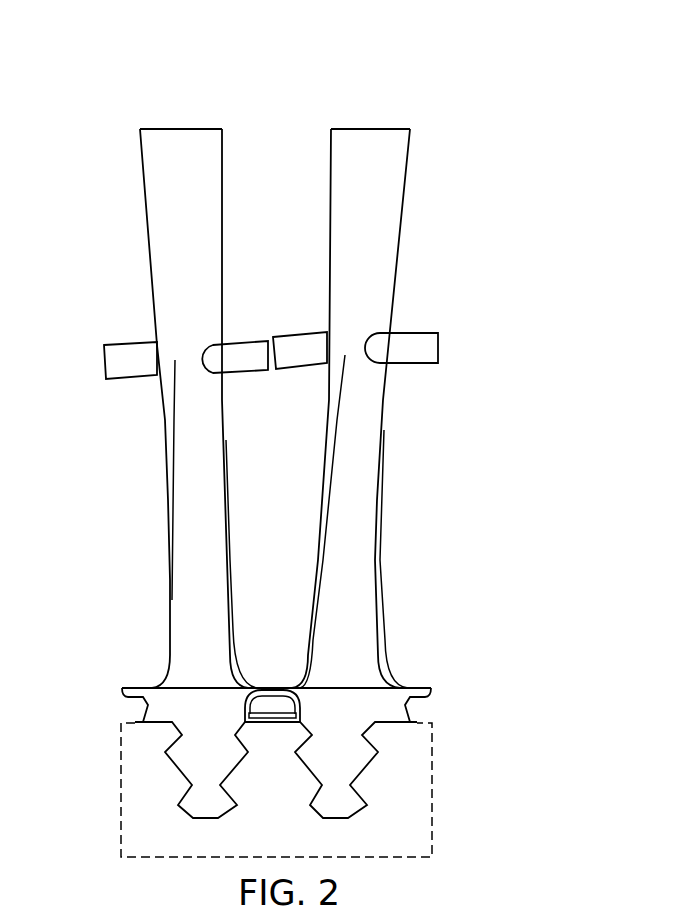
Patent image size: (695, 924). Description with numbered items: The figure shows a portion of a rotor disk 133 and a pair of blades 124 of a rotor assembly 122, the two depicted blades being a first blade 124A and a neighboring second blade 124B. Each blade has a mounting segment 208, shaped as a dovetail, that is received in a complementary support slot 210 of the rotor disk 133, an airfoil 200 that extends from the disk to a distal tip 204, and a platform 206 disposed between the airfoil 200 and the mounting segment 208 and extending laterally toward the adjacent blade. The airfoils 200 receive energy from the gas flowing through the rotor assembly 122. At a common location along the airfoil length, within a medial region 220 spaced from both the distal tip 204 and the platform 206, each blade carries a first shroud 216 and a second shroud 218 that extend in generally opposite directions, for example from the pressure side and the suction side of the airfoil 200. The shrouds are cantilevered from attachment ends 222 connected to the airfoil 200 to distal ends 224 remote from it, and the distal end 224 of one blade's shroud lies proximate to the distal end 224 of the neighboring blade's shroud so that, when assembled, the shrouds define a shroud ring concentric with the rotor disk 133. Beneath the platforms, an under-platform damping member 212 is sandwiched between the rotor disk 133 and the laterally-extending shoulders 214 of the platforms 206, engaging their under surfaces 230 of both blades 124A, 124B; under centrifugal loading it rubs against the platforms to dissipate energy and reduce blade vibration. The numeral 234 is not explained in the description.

The rotor assembly 122 is at (514, 101).
The blades 124 is at (276, 392).
The first blade 124A is at (397, 282).
The second blade 124B is at (152, 284).
The airfoil 200 is at (276, 392).
The distal tip 204 is at (146, 112).
The platform 206 is at (103, 660).
The mounting segment 208 is at (252, 765).
The support slot 210 is at (383, 779).
The under-platform damping member 212 is at (280, 707).
The laterally-extending shoulder 214 is at (152, 690).
The first shroud 216 is at (118, 359).
The second shroud 218 is at (244, 361).
The medial region 220 is at (350, 353).
The attachment end 222 is at (375, 372).
The distal end 224 is at (451, 359).
The under surface 230 is at (266, 718).
The platform edge 234 is at (430, 716).
The rotor disk 133 is at (417, 838).